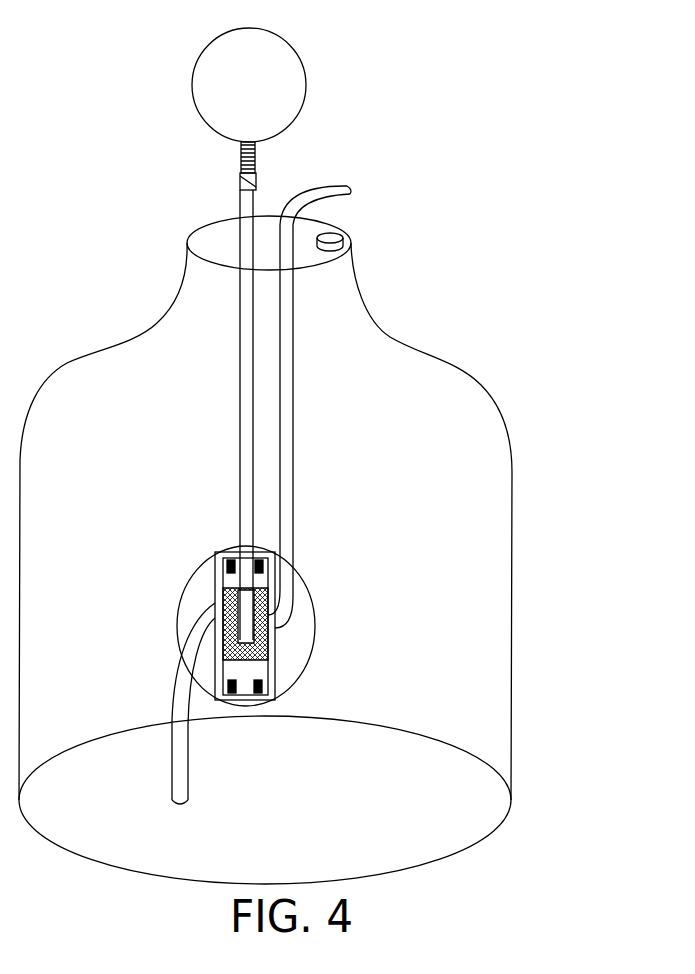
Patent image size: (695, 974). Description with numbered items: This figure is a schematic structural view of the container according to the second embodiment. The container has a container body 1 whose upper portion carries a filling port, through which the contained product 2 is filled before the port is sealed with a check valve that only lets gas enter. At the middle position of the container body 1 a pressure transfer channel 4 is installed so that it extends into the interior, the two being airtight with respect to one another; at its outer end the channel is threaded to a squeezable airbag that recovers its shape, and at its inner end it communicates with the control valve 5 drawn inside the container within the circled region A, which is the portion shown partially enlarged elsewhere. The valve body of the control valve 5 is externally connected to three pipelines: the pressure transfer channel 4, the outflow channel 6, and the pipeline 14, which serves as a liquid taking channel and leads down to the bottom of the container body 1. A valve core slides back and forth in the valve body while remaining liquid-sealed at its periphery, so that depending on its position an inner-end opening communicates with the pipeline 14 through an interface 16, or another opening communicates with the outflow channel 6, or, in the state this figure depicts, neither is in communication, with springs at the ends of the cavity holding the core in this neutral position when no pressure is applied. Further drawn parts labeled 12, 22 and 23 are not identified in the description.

The container body 1 is at (513, 447).
The contained product 2 is at (442, 678).
The pressure transfer channel 4 is at (247, 372).
The control valve 5 is at (223, 607).
The outflow channel 6 is at (290, 527).
The air inlet hole 12 is at (350, 240).
The pipeline 14 is at (178, 700).
The interface 16 is at (257, 153).
The knob 22 is at (270, 93).
The nut 23 is at (242, 178).
The partially enlarged region A is at (315, 625).